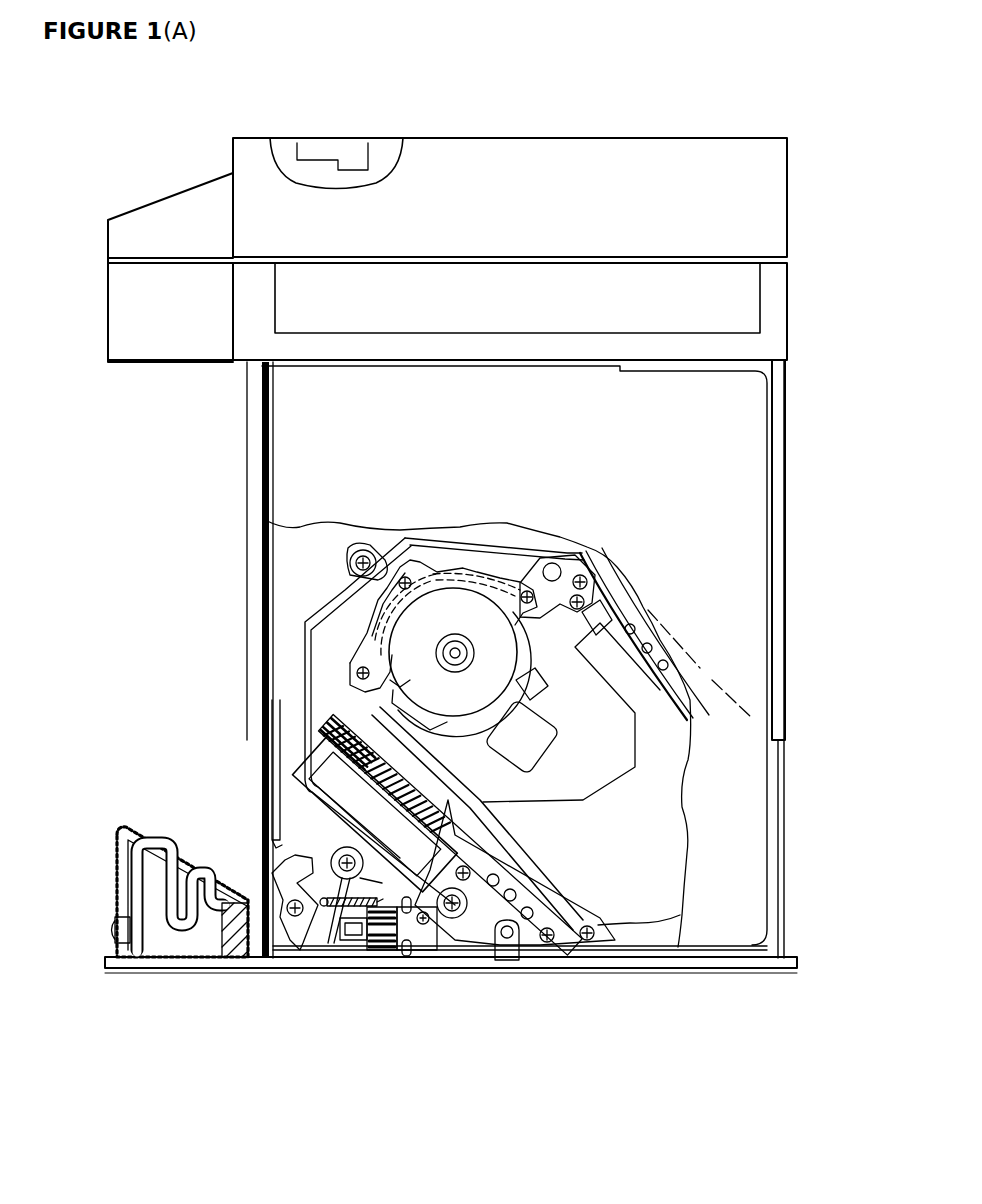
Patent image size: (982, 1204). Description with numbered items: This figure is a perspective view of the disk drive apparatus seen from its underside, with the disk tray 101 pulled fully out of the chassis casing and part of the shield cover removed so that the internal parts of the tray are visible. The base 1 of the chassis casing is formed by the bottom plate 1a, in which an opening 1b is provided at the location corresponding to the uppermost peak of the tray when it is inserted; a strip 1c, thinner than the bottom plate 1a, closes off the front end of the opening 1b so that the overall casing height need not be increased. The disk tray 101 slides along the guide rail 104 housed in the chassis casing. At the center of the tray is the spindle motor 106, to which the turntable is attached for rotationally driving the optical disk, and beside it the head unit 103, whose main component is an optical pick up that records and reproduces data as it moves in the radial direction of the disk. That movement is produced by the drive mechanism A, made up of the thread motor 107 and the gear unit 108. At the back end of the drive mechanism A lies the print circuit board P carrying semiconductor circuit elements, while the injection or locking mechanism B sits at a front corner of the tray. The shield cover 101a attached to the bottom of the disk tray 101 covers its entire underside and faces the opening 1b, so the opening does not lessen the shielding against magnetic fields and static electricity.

The base 1 is at (630, 138).
The bottom plate 1a is at (748, 157).
The opening 1b is at (653, 330).
The strip 1c is at (375, 345).
The disk tray 101 is at (783, 812).
The shield cover 101a is at (737, 417).
The head unit 103 is at (583, 763).
The guide rail 104 is at (258, 613).
The spindle motor 106 is at (517, 680).
The thread motor 107 is at (470, 826).
The gear unit 108 is at (332, 756).
The drive mechanism A is at (346, 697).
The locking mechanism B is at (282, 933).
The print circuit board P is at (265, 520).